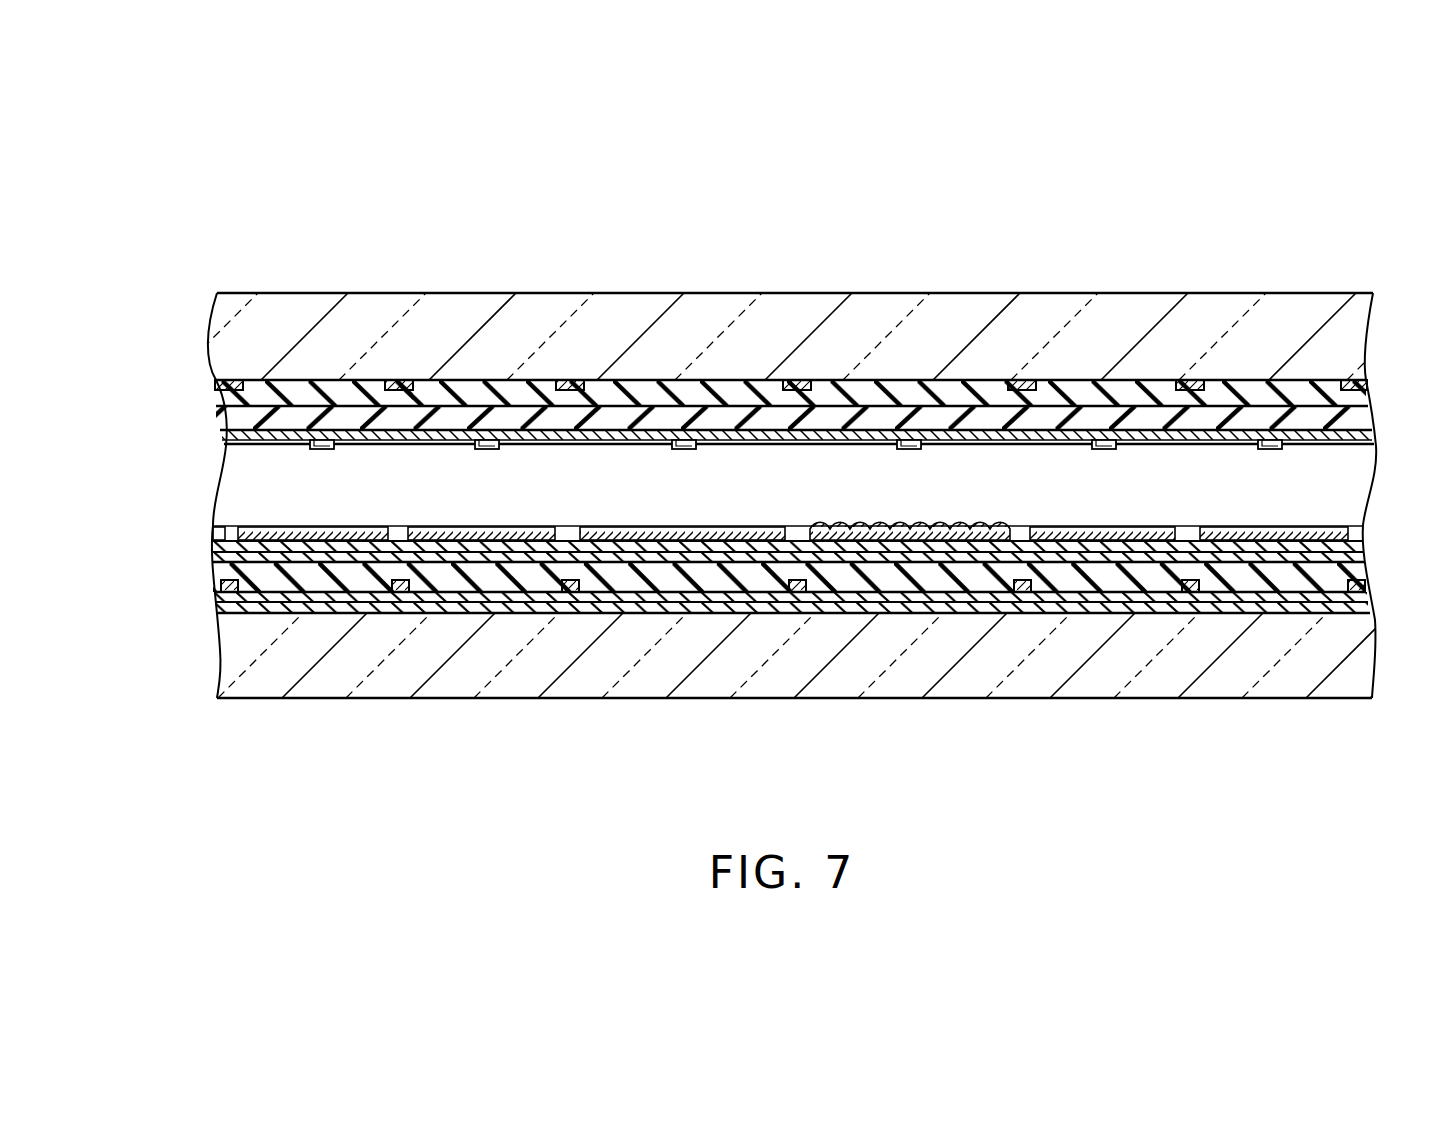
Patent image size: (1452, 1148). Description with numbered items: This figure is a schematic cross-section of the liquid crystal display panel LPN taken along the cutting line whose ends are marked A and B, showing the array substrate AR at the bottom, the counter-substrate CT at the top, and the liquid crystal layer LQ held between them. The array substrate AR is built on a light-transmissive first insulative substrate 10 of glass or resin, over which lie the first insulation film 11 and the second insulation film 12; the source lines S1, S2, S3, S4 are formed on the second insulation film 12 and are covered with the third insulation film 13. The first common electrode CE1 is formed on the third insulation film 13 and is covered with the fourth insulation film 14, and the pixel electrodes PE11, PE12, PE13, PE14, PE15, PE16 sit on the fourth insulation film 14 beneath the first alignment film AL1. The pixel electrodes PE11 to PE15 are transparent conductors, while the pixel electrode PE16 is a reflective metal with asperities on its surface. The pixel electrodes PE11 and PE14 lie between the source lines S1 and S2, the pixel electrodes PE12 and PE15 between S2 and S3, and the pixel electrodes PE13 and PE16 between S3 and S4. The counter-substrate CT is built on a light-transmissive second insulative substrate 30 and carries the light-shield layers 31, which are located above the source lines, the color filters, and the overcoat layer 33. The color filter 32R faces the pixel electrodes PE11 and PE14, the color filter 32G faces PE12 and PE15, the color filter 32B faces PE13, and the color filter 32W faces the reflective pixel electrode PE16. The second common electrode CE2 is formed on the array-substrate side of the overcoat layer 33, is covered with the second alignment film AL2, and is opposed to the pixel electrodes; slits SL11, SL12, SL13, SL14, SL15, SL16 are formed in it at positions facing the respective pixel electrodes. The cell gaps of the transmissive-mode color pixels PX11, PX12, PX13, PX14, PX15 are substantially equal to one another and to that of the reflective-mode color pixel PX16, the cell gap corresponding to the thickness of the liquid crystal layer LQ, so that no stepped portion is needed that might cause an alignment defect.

The second insulative substrate 30 is at (1362, 320).
The light-shield layer 31 is at (234, 380).
The color filter 32R is at (320, 395).
The color filter 32G is at (512, 395).
The color filter 32B is at (702, 395).
The color filter 32W is at (946, 395).
The overcoat layer 33 is at (1372, 408).
The second common electrode CE2 is at (222, 437).
The second alignment film AL2 is at (1366, 450).
The liquid crystal layer LQ is at (227, 487).
The first alignment film AL1 is at (1367, 527).
The first common electrode CE1 is at (213, 557).
The fourth insulation film 14 is at (1376, 541).
The third insulation film 13 is at (1376, 566).
The second insulation film 12 is at (1376, 593).
The first insulation film 11 is at (1376, 617).
The first insulative substrate 10 is at (1378, 652).
The counter-substrate CT is at (200, 340).
The array substrate AR is at (210, 661).
The liquid crystal display panel LPN is at (1228, 202).
The color pixel PX11 is at (345, 288).
The color pixel PX12 is at (470, 288).
The color pixel PX13 is at (662, 288).
The color pixel PX14 is at (1288, 288).
The color pixel PX15 is at (1087, 288).
The color pixel PX16 is at (892, 288).
The slit SL11 is at (318, 450).
The slit SL12 is at (487, 450).
The slit SL13 is at (684, 450).
The slit SL14 is at (1272, 450).
The slit SL15 is at (1105, 450).
The slit SL16 is at (909, 450).
The pixel electrode PE11 is at (322, 541).
The pixel electrode PE12 is at (488, 541).
The pixel electrode PE13 is at (682, 541).
The pixel electrode PE14 is at (1270, 541).
The pixel electrode PE15 is at (1104, 541).
The pixel electrode PE16 is at (908, 541).
The source line S1 is at (230, 593).
The source line S2 is at (400, 593).
The source line S3 is at (570, 593).
The source line S4 is at (797, 593).
The line A-B end A is at (190, 713).
The line A-B end B is at (1400, 713).